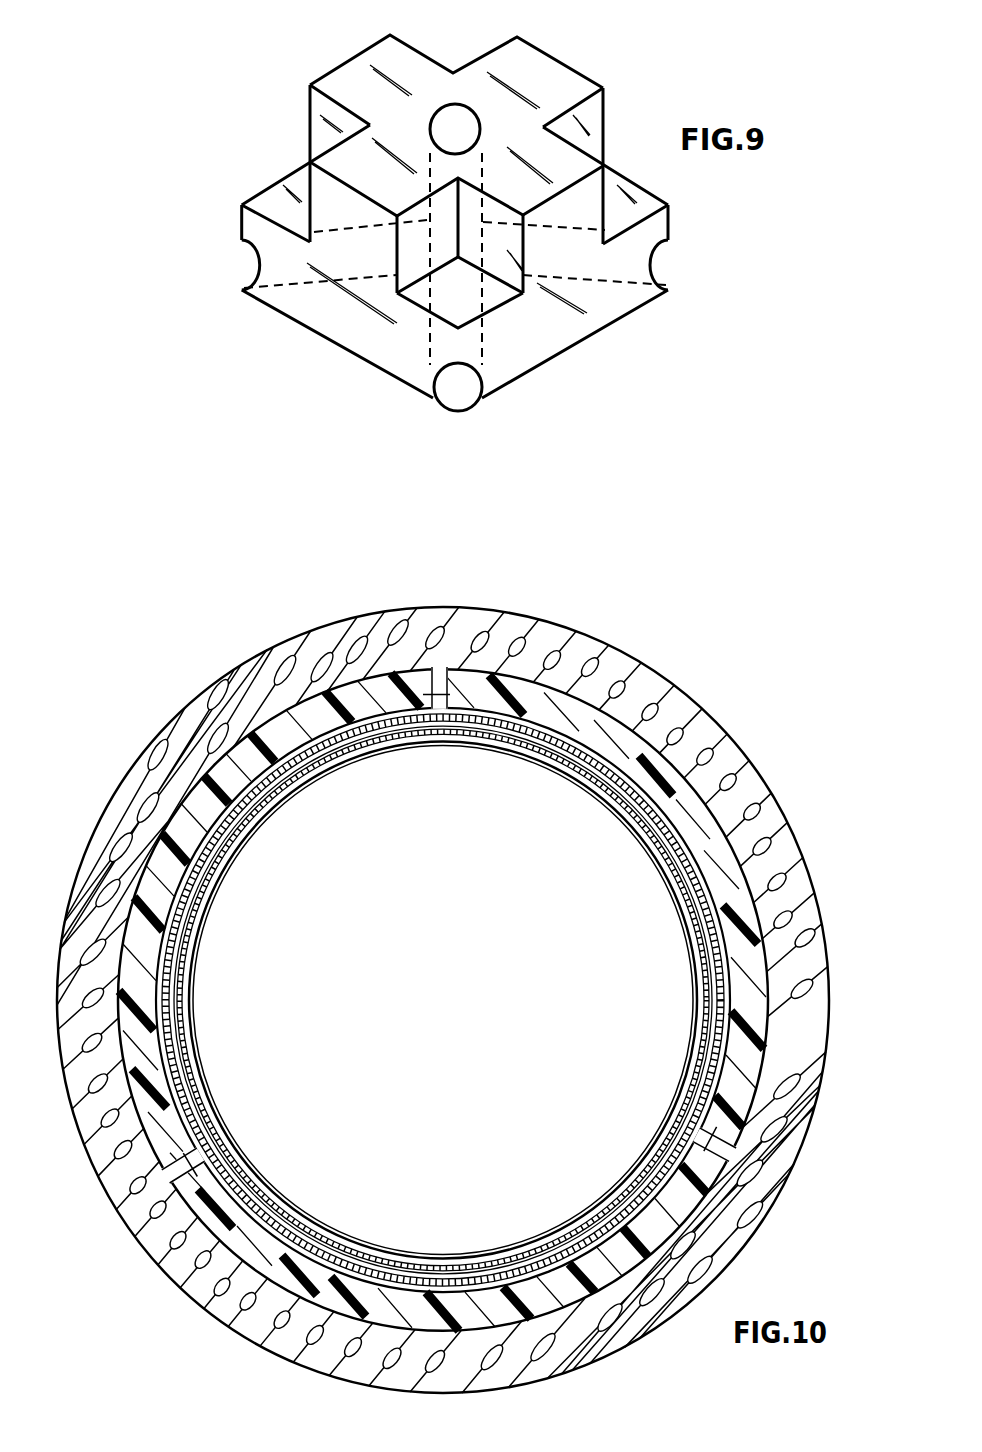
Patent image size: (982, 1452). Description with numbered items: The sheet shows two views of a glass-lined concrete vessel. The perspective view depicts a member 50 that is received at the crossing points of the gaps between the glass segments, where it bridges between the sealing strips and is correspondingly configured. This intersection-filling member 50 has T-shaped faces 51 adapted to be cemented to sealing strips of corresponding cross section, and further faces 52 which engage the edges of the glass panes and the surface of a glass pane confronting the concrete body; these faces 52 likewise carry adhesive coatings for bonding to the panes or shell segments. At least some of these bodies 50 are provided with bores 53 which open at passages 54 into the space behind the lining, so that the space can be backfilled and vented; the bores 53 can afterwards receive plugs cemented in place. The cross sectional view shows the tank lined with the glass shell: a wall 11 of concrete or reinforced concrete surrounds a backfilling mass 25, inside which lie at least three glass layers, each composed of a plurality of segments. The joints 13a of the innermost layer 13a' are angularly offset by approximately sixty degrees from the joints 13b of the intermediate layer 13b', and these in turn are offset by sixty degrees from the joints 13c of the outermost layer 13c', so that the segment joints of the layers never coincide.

In FIG. 9, the member 50 is at (600, 54).
In FIG. 9, the T-shaped faces 51 is at (355, 335).
In FIG. 9, the faces 52 is at (465, 300).
In FIG. 9, the bores 53 is at (462, 127).
In FIG. 9, the passages 54 is at (243, 262).
In FIG. 10, the wall 11 is at (728, 752).
In FIG. 10, the backfilling mass 25 is at (747, 893).
In FIG. 10, the joints 13a is at (450, 928).
In FIG. 10, the innermost layer 13a' is at (443, 999).
In FIG. 10, the joints 13b is at (443, 1000).
In FIG. 10, the intermediate layer 13b' is at (443, 1000).
In FIG. 10, the joints 13c is at (443, 1000).
In FIG. 10, the outermost layer 13c' is at (443, 1000).